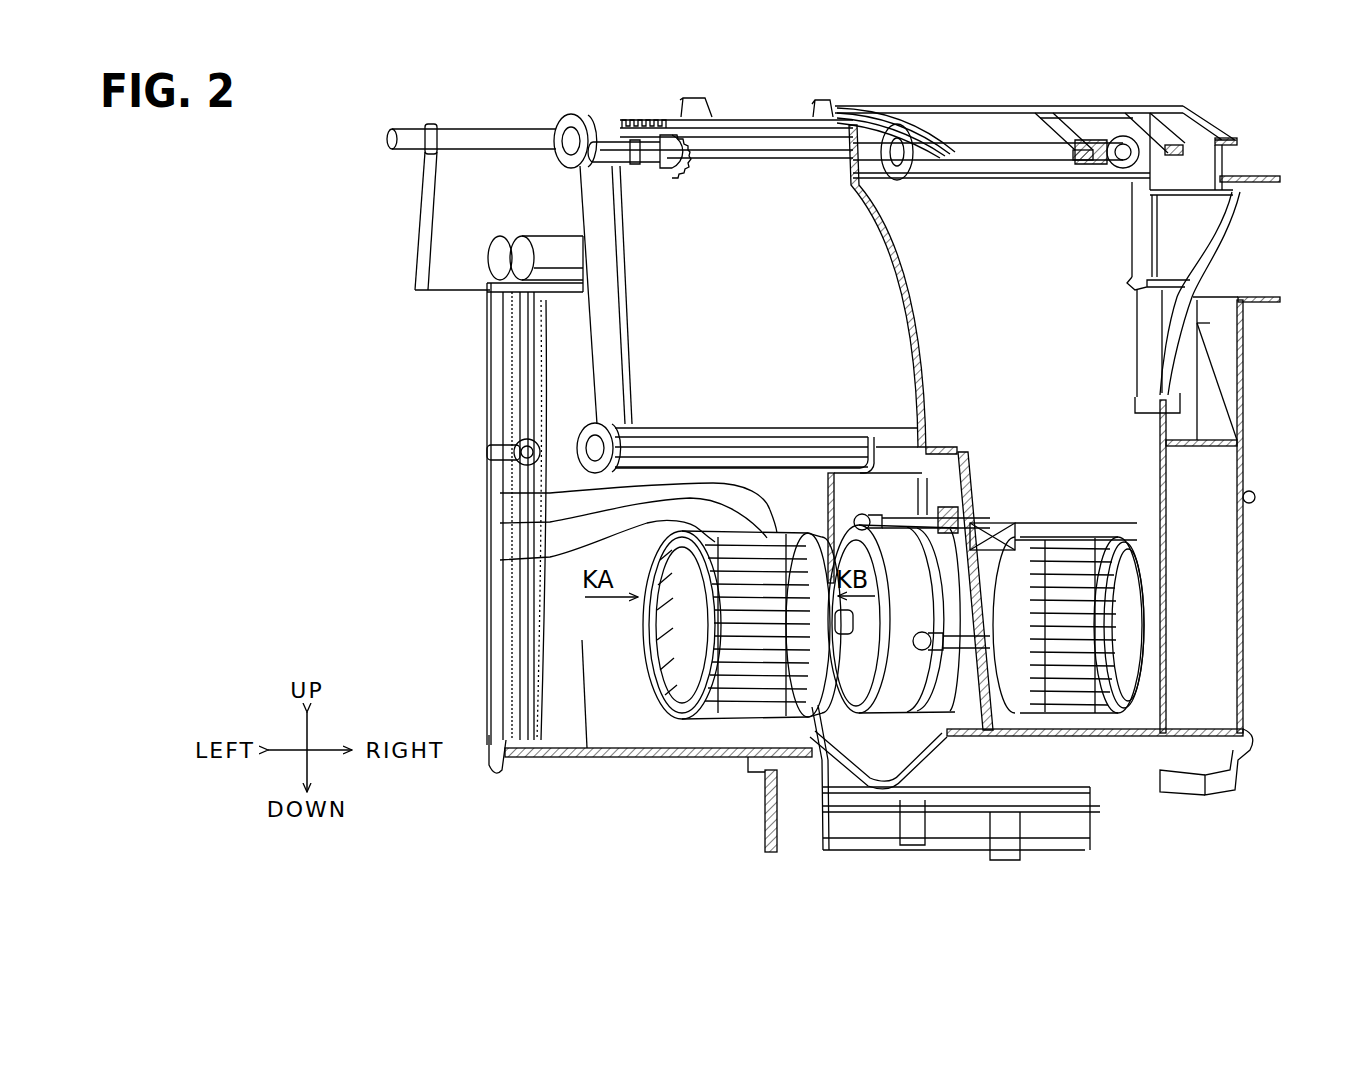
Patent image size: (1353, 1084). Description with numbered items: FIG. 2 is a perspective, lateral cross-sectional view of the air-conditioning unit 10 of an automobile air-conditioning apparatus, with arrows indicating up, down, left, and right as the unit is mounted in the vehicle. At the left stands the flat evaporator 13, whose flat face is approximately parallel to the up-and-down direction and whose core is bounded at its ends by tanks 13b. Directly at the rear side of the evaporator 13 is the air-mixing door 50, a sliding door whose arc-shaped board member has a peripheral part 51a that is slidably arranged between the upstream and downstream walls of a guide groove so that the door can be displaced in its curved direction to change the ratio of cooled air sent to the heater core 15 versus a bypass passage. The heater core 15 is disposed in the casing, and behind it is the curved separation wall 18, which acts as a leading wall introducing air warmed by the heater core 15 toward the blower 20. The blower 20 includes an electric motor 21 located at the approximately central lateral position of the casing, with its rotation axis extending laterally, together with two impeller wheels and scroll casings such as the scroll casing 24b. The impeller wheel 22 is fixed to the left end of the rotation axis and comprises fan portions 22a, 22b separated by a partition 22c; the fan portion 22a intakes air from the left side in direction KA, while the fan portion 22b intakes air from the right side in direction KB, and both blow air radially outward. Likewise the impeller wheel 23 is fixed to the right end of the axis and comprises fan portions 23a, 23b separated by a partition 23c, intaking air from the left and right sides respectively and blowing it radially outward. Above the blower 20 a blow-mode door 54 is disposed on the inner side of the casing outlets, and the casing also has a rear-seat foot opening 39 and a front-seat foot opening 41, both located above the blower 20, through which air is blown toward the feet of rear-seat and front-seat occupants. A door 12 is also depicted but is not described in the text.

The air-conditioning unit 10 is at (561, 866).
The door 12 is at (488, 188).
The evaporator 13 is at (567, 374).
The tanks 13b is at (522, 258).
The heater core 15 is at (780, 226).
The separation wall 18 is at (1000, 265).
The blower 20 is at (1060, 897).
The electric motor 21 is at (880, 722).
The impeller wheel 22 is at (728, 722).
The fan portion 22a is at (680, 592).
The fan portion 22b is at (790, 532).
The partition 22c is at (752, 560).
The impeller wheel 23 is at (1043, 722).
The fan portion 23a is at (1100, 571).
The fan portion 23b is at (1080, 606).
The partition 23c is at (1130, 592).
The scroll casing 24b is at (1122, 736).
The rear-seat foot opening 39 is at (1195, 417).
The front-seat foot opening 41 is at (1256, 258).
The air-mixing door 50 is at (576, 642).
The peripheral part 51a is at (535, 590).
The blow-mode door 54 is at (741, 128).